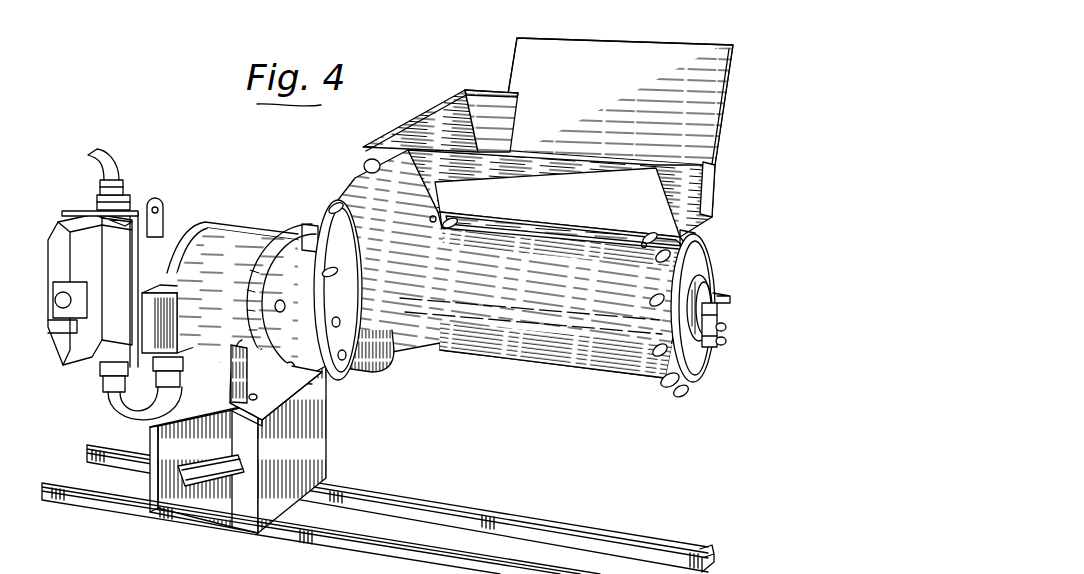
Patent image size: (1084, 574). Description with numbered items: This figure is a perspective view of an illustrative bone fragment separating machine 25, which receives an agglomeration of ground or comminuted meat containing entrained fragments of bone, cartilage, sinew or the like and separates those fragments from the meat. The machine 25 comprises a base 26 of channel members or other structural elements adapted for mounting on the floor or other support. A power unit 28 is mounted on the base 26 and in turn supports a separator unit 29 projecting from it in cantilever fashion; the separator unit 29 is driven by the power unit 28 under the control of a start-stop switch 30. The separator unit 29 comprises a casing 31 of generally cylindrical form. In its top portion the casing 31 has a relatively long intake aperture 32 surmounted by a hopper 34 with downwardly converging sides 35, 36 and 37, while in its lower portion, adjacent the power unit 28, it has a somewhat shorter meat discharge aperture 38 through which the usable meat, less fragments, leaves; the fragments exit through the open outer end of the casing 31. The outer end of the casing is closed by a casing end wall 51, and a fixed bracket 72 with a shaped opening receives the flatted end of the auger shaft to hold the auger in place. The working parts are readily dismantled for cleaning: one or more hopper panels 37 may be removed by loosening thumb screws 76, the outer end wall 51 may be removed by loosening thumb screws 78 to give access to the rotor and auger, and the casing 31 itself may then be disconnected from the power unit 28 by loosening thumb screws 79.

The machine 25 is at (238, 151).
The base 26 is at (332, 428).
The power unit 28 is at (247, 241).
The separator unit 29 is at (549, 370).
The start-stop switch 30 is at (62, 243).
The casing 31 is at (520, 330).
The intake aperture 32 is at (692, 218).
The hopper 34 is at (444, 97).
The hopper side 35 is at (610, 46).
The hopper side 36 is at (412, 130).
The hopper panel 37 is at (562, 207).
The meat discharge aperture 38 is at (421, 338).
The casing end wall 51 is at (703, 360).
The fixed bracket 72 is at (723, 316).
The thumb screws 76 is at (433, 221).
The thumb screws 78 is at (660, 303).
The thumb screws 79 is at (331, 274).